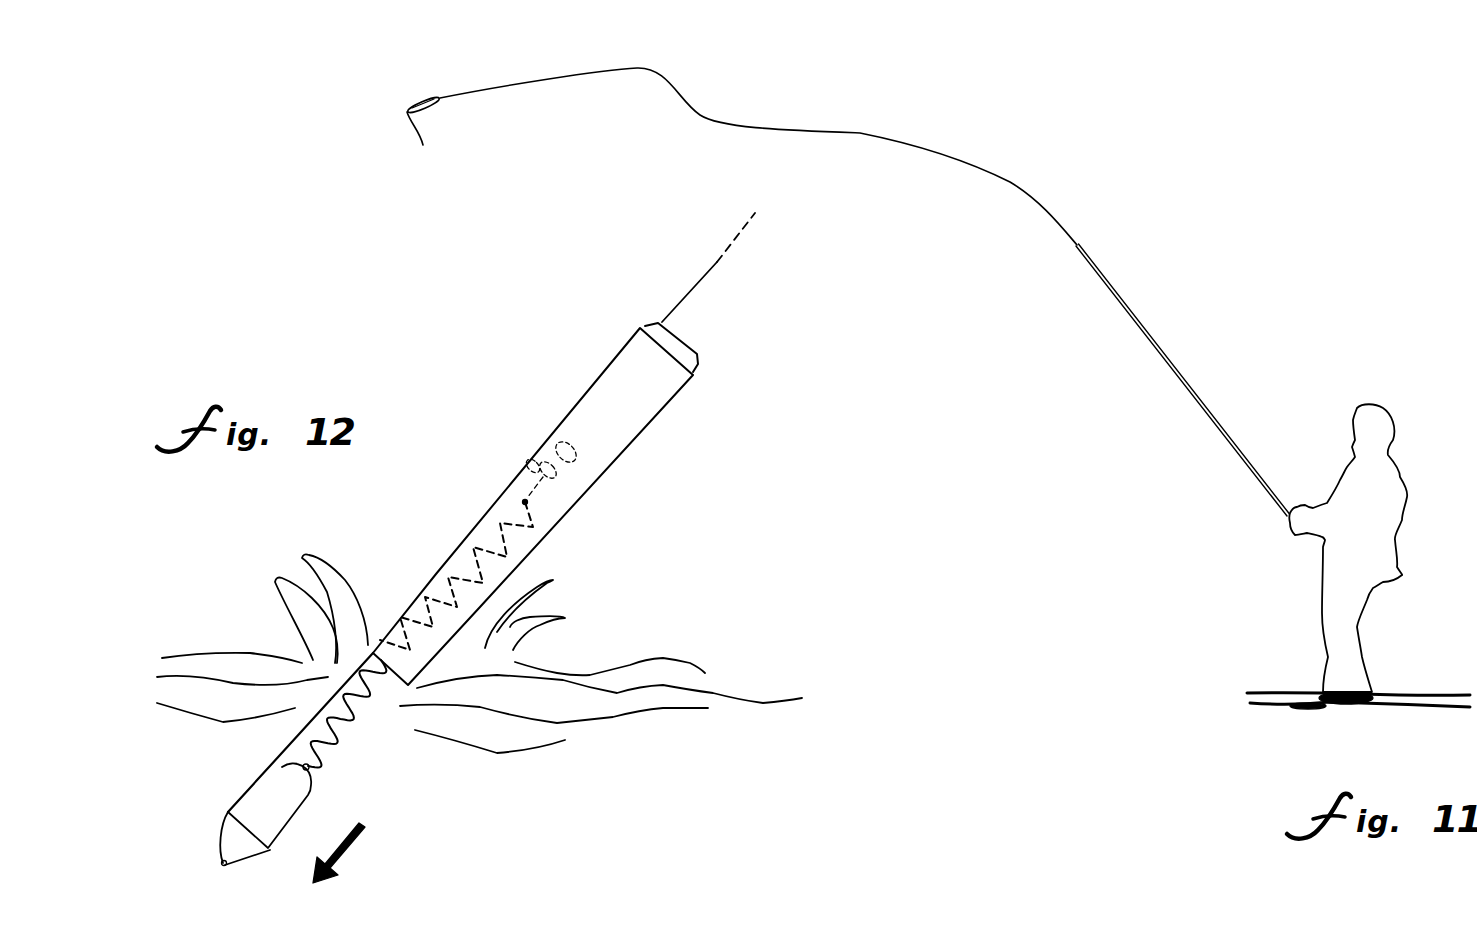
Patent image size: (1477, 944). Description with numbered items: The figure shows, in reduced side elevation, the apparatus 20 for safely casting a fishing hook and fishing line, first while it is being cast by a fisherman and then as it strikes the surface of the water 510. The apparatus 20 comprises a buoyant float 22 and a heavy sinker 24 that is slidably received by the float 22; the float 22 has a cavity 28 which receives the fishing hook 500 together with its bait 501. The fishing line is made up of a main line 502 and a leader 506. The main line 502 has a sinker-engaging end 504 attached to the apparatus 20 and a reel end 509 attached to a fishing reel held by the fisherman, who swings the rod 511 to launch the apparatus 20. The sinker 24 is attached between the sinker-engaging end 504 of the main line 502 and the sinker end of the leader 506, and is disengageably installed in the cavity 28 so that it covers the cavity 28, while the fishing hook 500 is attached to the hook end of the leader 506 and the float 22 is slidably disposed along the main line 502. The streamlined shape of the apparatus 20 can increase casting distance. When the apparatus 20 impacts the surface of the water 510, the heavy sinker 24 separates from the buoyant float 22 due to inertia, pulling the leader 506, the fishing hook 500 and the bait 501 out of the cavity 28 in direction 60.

In FIG. 11, the apparatus 20 is at (408, 91).
In FIG. 12, the apparatus 20 is at (434, 490).
In FIG. 12, the float 22 is at (527, 472).
In FIG. 12, the sinker 24 is at (293, 817).
In FIG. 12, the cavity 28 is at (520, 537).
In FIG. 12, the direction 60 is at (348, 852).
In FIG. 12, the fishing hook 500 is at (567, 480).
In FIG. 12, the bait 501 is at (583, 457).
In FIG. 11, the main line 502 is at (957, 155).
In FIG. 12, the main line 502 is at (678, 300).
In FIG. 11, the sinker-engaging end 504 is at (423, 144).
In FIG. 12, the leader 506 is at (335, 743).
In FIG. 11, the reel end 509 is at (1283, 523).
In FIG. 12, the surface of the water 510 is at (553, 702).
In FIG. 11, the fishing rod 511 is at (1172, 362).